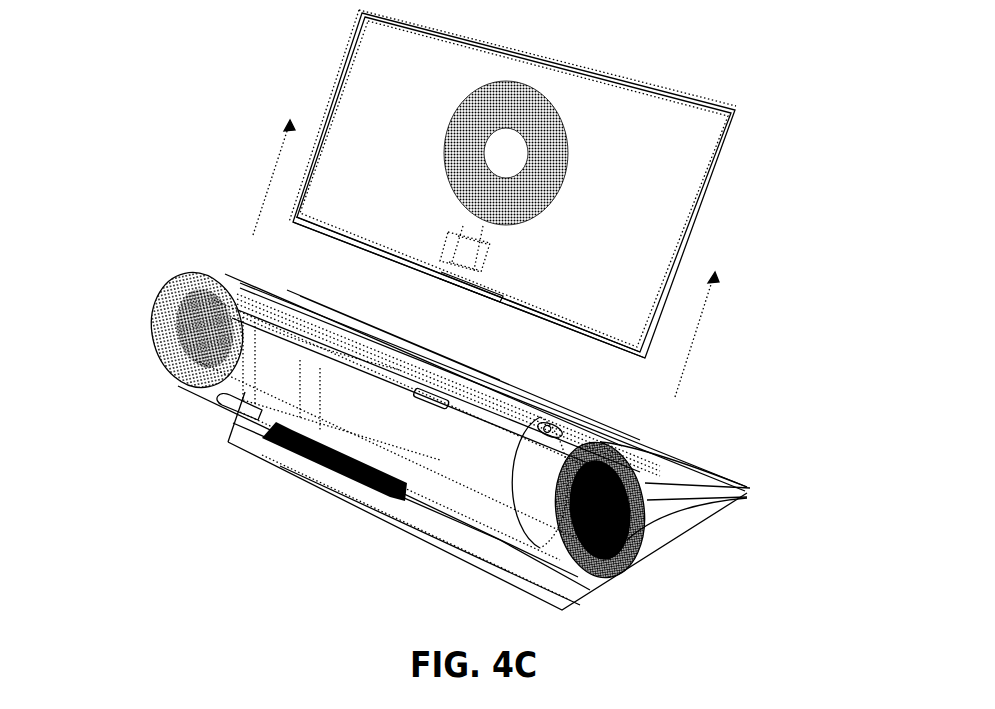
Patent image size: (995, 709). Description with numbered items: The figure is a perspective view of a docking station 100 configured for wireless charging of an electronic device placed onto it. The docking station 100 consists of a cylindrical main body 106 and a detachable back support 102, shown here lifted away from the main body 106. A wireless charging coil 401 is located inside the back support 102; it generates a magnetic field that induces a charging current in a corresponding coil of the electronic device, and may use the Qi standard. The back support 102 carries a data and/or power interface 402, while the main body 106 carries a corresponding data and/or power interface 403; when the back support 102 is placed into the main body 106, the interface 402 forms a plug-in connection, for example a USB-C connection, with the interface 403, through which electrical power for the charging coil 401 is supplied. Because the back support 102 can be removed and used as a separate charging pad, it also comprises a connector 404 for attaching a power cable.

The docking station 100 is at (143, 60).
The back support 102 is at (630, 207).
The main body 106 is at (205, 388).
The charging coil 401 is at (579, 85).
The data and/or power interface 402 is at (475, 277).
The corresponding data and/or power interface 403 is at (430, 440).
The connector 404 is at (352, 254).